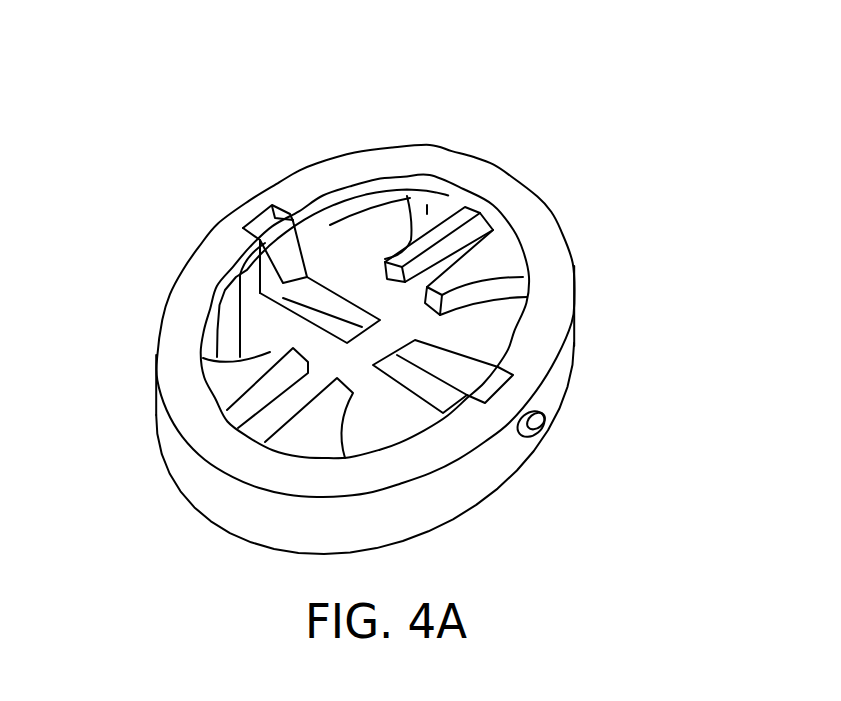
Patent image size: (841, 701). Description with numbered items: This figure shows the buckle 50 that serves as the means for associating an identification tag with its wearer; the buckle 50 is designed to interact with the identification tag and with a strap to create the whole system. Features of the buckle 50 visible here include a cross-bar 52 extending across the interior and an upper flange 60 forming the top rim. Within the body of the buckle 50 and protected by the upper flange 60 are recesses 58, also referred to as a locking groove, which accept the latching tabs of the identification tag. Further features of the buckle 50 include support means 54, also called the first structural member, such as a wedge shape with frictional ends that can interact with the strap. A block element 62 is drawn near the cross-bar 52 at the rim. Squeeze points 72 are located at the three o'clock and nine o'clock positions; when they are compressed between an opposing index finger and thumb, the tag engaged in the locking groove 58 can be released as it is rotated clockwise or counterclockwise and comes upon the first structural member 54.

The buckle 50 is at (557, 387).
The cross-bar 52 is at (262, 291).
The support means 54 is at (427, 213).
The recesses 58 is at (362, 207).
The upper flange 60 is at (527, 213).
The block 62 is at (331, 193).
The squeeze points 72 is at (253, 198).